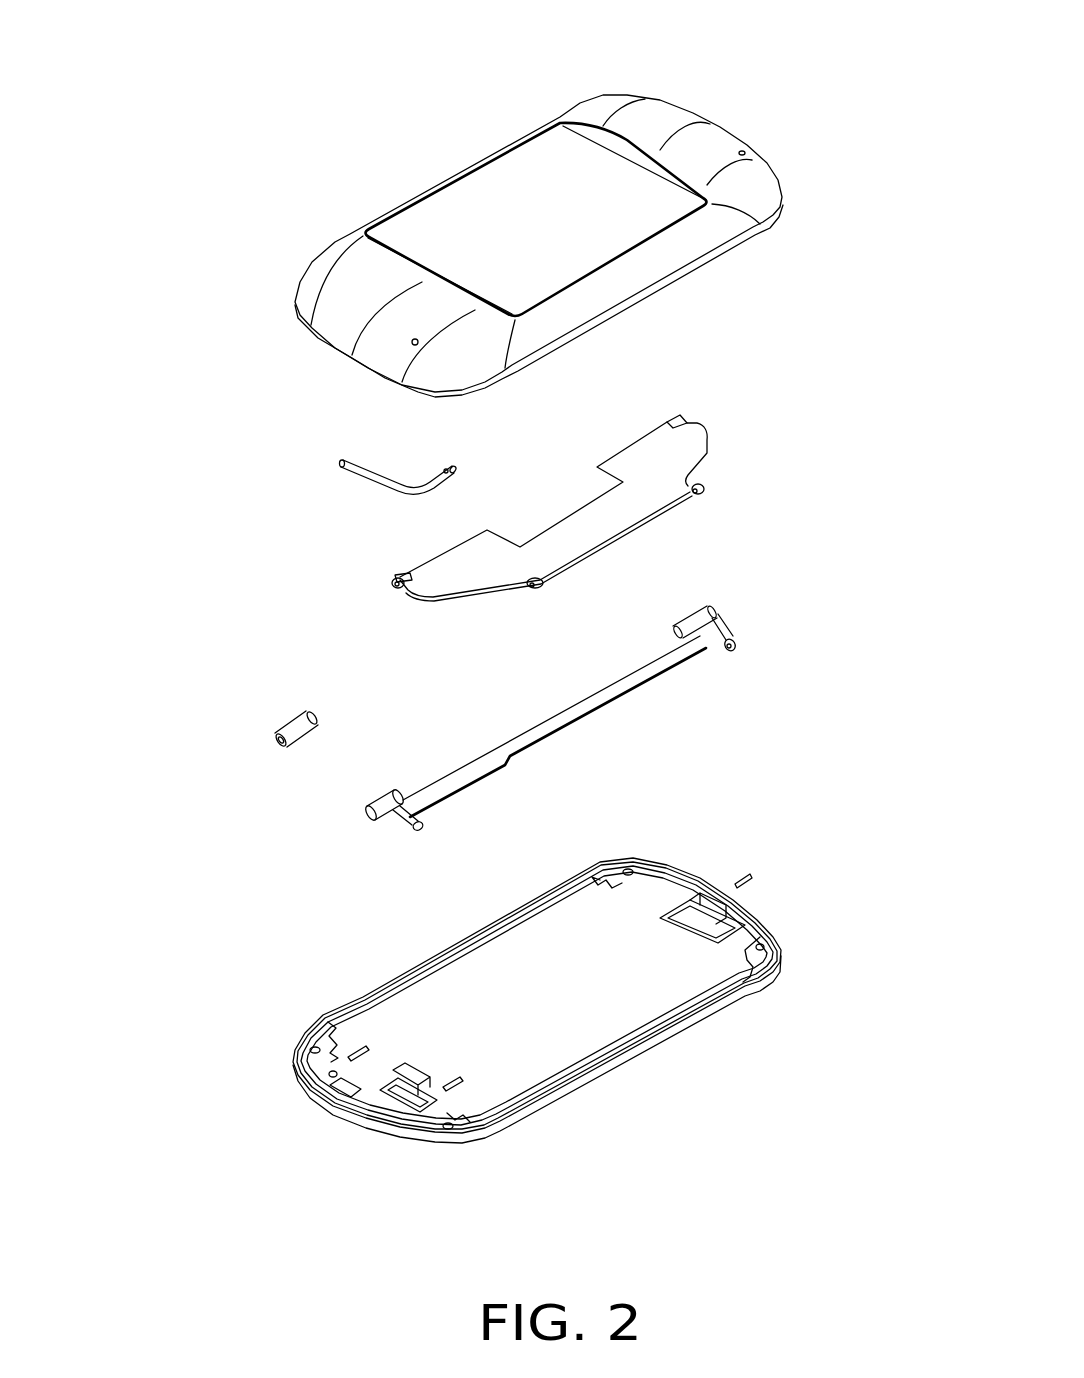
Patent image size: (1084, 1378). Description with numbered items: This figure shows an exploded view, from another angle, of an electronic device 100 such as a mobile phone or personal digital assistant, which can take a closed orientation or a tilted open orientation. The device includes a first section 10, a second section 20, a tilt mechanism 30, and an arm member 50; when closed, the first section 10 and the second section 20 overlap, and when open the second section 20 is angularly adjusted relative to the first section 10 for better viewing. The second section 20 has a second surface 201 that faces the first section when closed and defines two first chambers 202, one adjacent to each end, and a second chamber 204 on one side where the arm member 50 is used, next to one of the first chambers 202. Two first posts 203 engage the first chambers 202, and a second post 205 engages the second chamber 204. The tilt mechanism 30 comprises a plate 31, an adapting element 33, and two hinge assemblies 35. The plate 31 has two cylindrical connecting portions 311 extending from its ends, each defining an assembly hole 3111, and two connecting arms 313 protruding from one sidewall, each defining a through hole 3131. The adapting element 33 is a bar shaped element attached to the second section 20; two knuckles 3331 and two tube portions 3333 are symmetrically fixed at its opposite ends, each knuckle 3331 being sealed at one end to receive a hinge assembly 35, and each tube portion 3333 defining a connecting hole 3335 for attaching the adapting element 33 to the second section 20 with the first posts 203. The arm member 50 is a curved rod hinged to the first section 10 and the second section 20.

The electronic device 100 is at (578, 31).
The first section 10 is at (712, 148).
The second section 20 is at (537, 1004).
The second surface 201 is at (423, 1053).
The first chamber 202 is at (670, 883).
The first post 203 is at (745, 870).
The second chamber 204 is at (332, 1094).
The second post 205 is at (350, 1042).
The tilt mechanism 30 is at (193, 497).
The plate 31 is at (453, 535).
The connecting portion 311 is at (397, 577).
The assembly hole 3111 is at (393, 597).
The connecting arm 313 is at (540, 580).
The through hole 3131 is at (530, 587).
The adapting element 33 is at (467, 749).
The knuckle 3331 is at (387, 793).
The tube portion 3333 is at (423, 827).
The connecting hole 3335 is at (410, 830).
The hinge assembly 35 is at (290, 713).
The arm member 50 is at (353, 462).